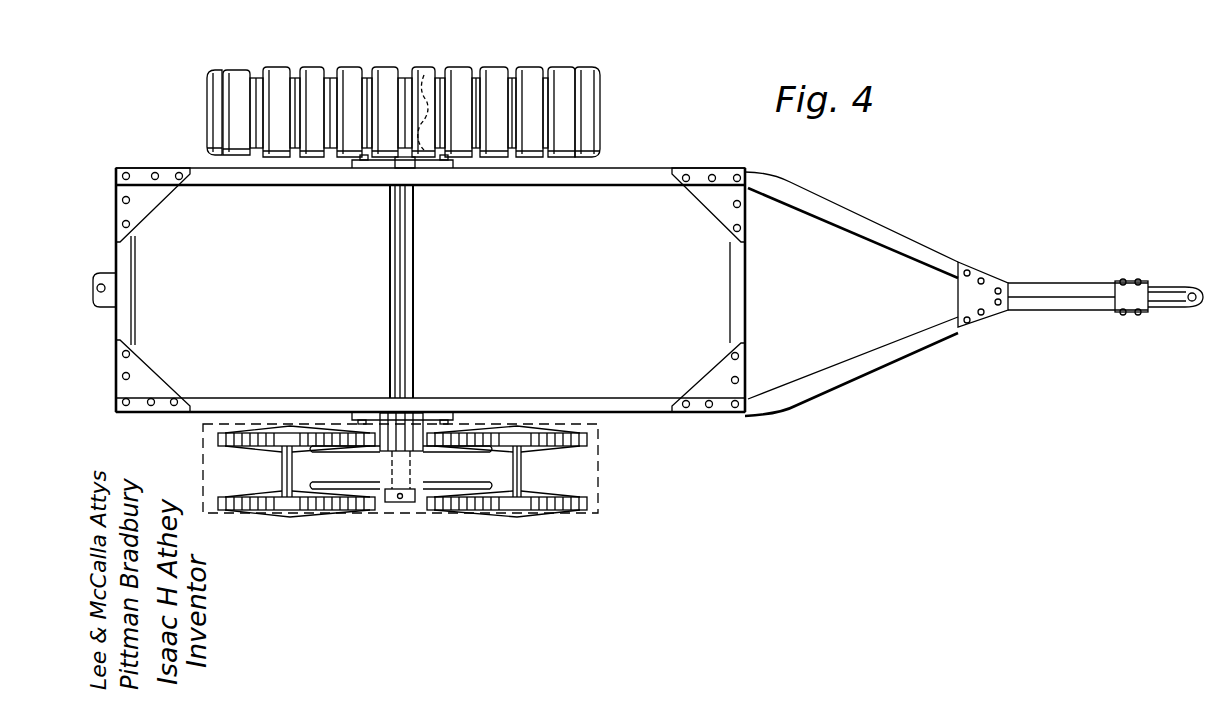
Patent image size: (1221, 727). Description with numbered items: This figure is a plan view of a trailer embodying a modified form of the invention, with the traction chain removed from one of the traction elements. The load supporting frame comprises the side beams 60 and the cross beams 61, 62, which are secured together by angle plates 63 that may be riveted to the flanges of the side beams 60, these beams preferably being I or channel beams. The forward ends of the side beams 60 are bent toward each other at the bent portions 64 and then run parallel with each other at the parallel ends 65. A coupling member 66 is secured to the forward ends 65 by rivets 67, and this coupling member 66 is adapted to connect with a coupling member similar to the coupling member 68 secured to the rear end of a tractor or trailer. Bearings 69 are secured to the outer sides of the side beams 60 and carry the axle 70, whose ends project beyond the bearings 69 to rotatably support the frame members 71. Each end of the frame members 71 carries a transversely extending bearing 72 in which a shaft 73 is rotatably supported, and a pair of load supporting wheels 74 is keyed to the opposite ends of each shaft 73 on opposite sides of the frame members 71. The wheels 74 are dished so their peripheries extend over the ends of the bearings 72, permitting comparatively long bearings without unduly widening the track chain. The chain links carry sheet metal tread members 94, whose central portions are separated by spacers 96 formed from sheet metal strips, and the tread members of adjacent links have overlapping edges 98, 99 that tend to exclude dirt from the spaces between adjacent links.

The side beams 60 is at (592, 186).
The cross beam 61 is at (126, 298).
The cross beam 62 is at (730, 277).
The angle plates 63 is at (150, 203).
The bent forward ends of side beams 64 is at (893, 242).
The parallel forward ends of side beams 65 is at (1076, 292).
The coupling member 66 is at (966, 288).
The rivets 67 is at (1132, 282).
The coupling member 68 is at (104, 277).
The bearings 69 is at (418, 168).
The axle 70 is at (400, 306).
The frame members 71 is at (401, 457).
The transversely extending bearing 72 is at (281, 462).
The shaft 73 is at (295, 483).
The load supporting wheels 74 is at (218, 436).
The sheet metal tread members 94 is at (403, 93).
The spacers 96 is at (424, 88).
The overlapping edge 98 is at (327, 93).
The overlapping edge 99 is at (334, 95).